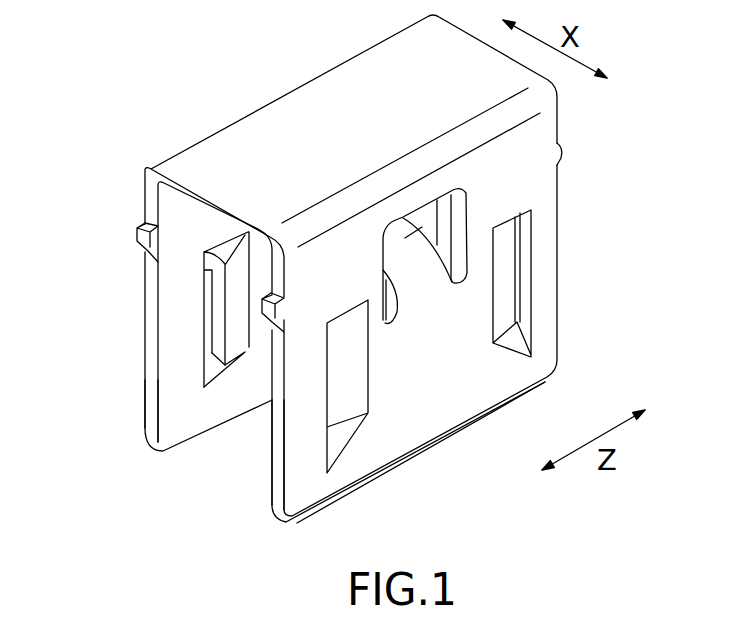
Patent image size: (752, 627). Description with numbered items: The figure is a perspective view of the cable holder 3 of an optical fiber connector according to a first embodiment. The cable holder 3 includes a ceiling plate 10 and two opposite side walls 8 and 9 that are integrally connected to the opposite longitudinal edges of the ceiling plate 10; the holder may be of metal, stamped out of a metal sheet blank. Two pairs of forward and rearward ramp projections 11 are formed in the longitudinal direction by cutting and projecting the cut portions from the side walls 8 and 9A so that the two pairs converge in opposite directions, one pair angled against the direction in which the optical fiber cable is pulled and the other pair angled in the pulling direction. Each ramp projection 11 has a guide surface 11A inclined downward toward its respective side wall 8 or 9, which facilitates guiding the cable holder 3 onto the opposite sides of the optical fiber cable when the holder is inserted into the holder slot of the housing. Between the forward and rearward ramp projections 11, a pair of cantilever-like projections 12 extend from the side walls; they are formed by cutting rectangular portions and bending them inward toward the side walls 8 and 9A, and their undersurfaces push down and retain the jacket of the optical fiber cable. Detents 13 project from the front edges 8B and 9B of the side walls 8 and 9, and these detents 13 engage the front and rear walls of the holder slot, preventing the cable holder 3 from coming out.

The cable holder 3 is at (196, 96).
The side wall 8 is at (150, 333).
The front edge of side wall 8B is at (147, 383).
The side wall 9 is at (552, 243).
The side wall 9A is at (465, 400).
The front edge of side wall 9B is at (278, 457).
The ceiling plate 10 is at (328, 88).
The ramp projection 11 is at (225, 303).
The guide surface 11A is at (229, 366).
The cantilever-like projection 12 is at (407, 217).
The detent 13 is at (137, 233).